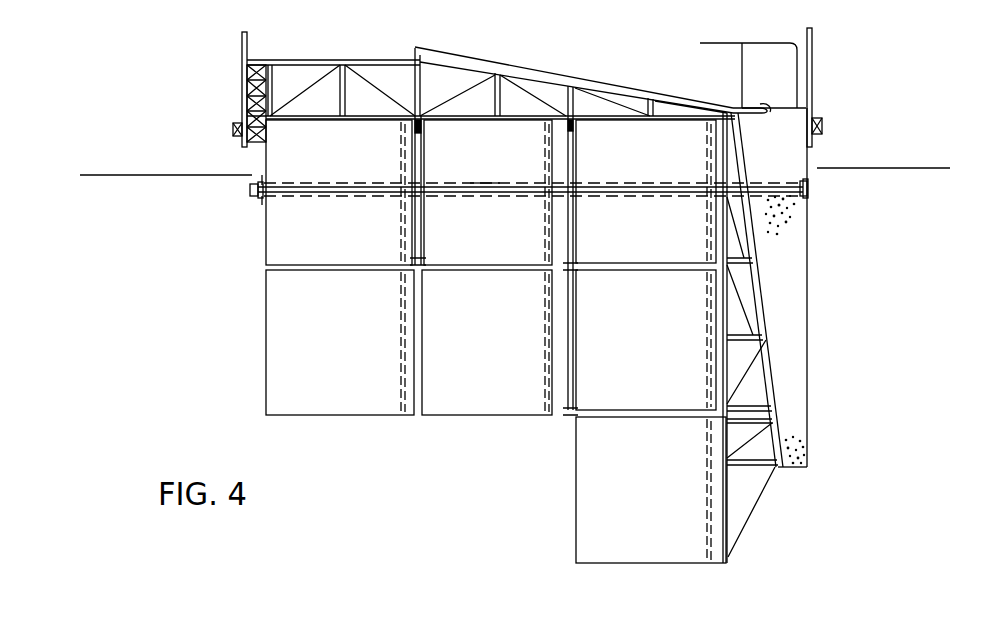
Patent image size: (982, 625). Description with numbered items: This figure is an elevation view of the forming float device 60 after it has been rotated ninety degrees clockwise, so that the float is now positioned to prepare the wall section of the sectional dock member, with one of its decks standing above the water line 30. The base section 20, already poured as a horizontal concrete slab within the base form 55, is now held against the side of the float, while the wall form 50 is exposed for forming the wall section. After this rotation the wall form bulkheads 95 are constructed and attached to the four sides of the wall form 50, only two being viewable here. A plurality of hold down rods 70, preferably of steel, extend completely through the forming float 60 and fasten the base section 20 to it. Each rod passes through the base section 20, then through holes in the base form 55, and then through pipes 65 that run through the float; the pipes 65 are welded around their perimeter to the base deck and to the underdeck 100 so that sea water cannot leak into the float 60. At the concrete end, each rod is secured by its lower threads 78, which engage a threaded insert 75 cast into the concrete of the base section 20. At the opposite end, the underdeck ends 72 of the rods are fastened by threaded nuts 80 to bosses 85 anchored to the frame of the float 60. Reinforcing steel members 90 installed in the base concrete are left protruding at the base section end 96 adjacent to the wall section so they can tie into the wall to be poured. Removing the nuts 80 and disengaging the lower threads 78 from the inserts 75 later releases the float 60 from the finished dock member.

The base section 20 is at (797, 273).
The water line 30 is at (92, 175).
The wall form 50 is at (364, 58).
The base form 55 is at (780, 470).
The forming float device 60 is at (505, 415).
The pipes 65 is at (485, 183).
The hold down rods 70 is at (810, 188).
The underdeck ends 72 is at (250, 192).
The threaded insert 75 is at (807, 198).
The lower threads 78 is at (793, 184).
The threaded nuts 80 is at (258, 185).
The bosses 85 is at (262, 200).
The reinforcing steel members 90 is at (745, 43).
The wall form bulkheads 95 is at (242, 66).
The base section end 96 is at (770, 107).
The underdeck 100 is at (266, 330).